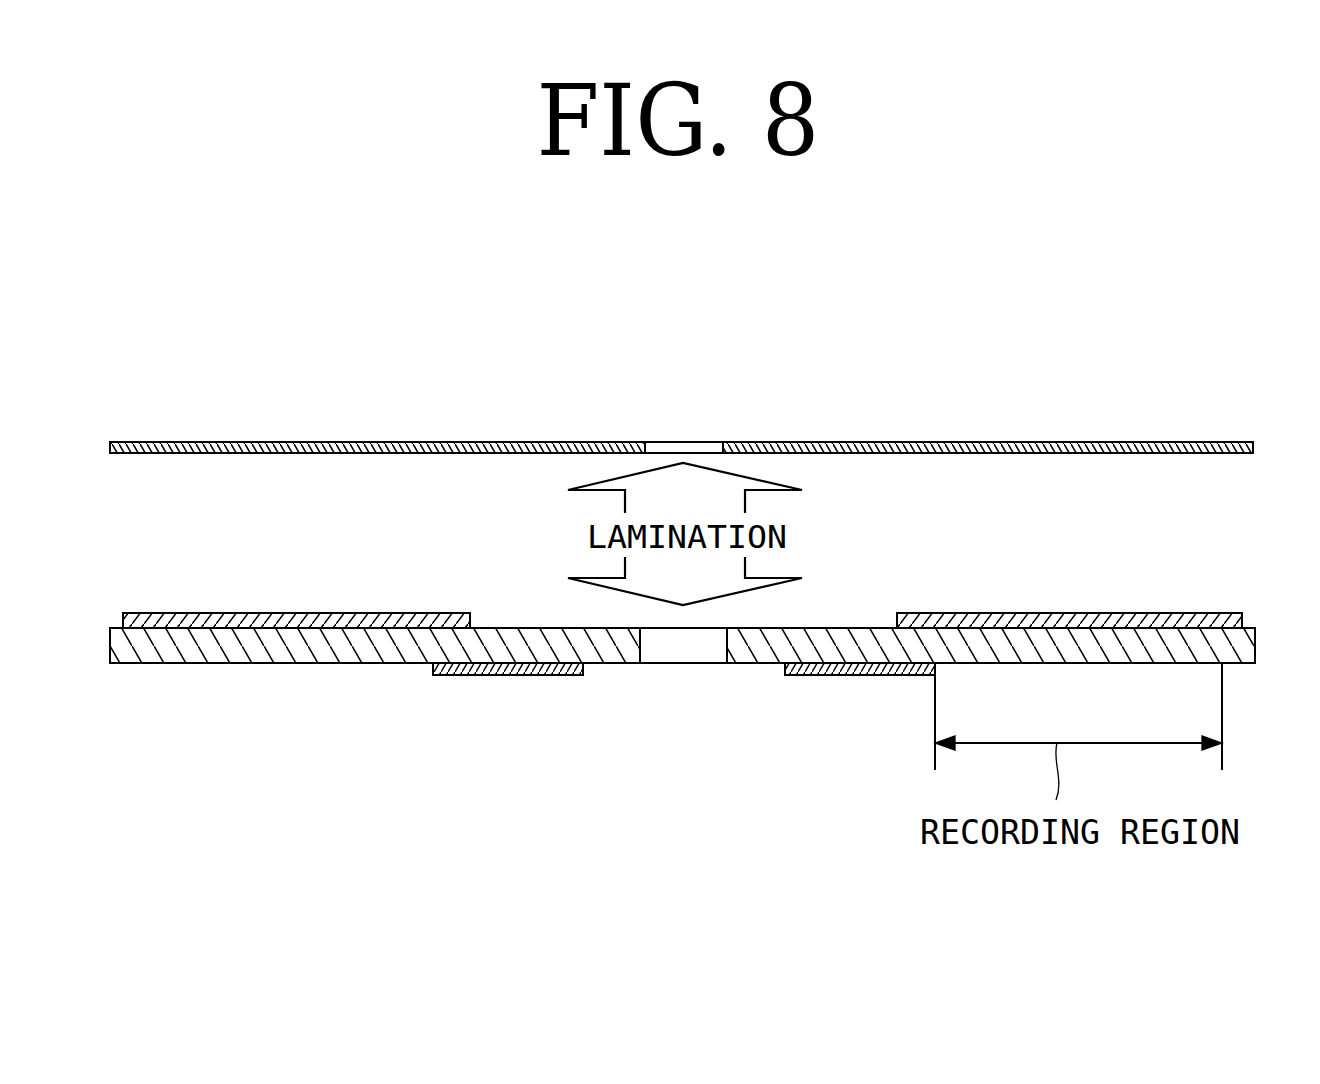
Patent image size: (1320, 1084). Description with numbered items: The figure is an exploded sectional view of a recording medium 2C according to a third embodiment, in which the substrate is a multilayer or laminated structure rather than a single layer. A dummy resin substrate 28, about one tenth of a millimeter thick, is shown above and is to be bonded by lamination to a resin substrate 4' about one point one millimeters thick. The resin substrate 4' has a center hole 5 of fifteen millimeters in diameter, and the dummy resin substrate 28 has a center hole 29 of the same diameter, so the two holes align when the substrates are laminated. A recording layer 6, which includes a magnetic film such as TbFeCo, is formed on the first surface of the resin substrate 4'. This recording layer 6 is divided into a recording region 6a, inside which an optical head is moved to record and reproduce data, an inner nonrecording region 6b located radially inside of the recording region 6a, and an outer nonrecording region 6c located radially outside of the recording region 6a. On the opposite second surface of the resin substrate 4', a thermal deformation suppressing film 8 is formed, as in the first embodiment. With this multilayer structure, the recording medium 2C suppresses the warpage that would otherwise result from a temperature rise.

The dummy resin substrate 28 is at (935, 442).
The center hole 29 is at (648, 442).
The resin substrate 4' is at (682, 685).
The center hole 5 is at (718, 652).
The recording medium 2C is at (355, 663).
The recording layer 6 is at (320, 612).
The recording region 6a is at (1095, 613).
The inner nonrecording region 6b is at (905, 613).
The outer nonrecording region 6c is at (1230, 613).
The thermal deformation suppressing film 8 is at (500, 676).